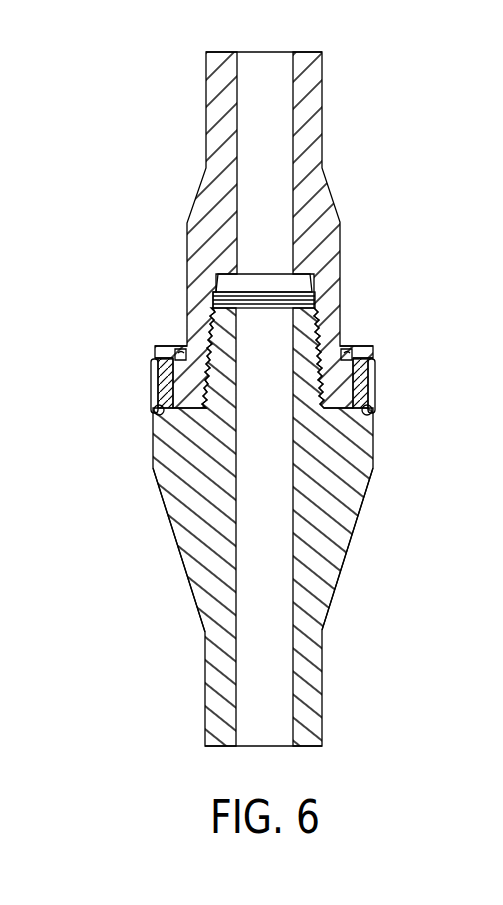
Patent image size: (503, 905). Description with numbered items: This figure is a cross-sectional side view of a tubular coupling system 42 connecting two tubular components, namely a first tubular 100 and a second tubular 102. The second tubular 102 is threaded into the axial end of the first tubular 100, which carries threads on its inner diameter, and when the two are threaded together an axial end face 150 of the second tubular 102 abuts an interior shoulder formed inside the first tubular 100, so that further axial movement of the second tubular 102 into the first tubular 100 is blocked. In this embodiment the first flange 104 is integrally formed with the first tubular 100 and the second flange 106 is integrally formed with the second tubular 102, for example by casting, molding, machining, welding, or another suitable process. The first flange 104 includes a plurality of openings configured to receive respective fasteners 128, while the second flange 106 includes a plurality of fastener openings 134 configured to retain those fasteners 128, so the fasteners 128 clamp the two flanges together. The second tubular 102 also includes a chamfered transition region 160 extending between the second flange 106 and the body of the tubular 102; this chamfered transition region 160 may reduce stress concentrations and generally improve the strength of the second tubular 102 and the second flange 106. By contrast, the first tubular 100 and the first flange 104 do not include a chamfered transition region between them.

The first tubular 100 is at (322, 93).
The second tubular 102 is at (313, 700).
The first flange 104 is at (374, 384).
The second flange 106 is at (375, 418).
The fasteners 128 is at (165, 352).
The fastener openings 134 is at (160, 413).
The axial end face 150 is at (308, 272).
The chamfered transition region 160 is at (180, 548).
The tubular coupling system 42 is at (141, 378).